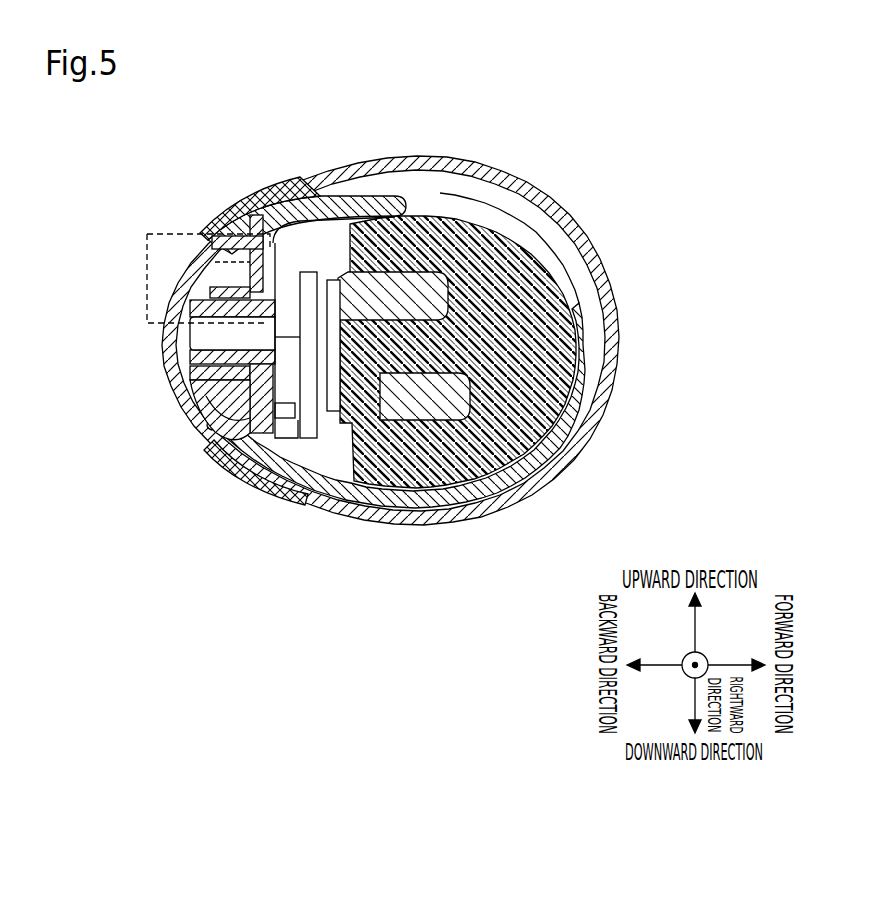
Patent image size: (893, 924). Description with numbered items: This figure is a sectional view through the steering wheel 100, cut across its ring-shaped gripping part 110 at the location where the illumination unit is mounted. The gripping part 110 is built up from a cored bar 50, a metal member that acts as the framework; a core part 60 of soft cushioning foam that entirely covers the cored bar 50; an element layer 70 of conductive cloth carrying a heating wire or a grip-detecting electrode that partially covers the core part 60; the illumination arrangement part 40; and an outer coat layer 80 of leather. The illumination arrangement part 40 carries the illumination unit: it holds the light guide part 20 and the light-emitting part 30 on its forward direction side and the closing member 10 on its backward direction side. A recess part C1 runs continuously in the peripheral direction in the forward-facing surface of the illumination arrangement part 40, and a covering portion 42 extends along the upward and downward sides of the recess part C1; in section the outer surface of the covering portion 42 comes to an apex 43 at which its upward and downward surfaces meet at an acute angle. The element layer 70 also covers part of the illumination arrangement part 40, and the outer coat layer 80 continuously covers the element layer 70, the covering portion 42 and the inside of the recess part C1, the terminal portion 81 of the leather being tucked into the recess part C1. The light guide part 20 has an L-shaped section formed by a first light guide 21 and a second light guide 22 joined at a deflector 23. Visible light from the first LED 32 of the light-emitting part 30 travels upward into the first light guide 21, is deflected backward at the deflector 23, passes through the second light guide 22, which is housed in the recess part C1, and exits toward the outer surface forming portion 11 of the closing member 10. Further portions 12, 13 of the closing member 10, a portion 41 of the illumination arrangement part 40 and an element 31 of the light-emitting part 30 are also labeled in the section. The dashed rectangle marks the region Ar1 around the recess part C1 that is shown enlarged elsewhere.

The steering wheel 100 is at (707, 188).
The gripping part 110 is at (530, 178).
The outer coat layer 80 is at (590, 438).
The element layer 70 is at (585, 395).
The core part 60 is at (557, 330).
The cored bar 50 is at (430, 412).
The illumination arrangement part 40 is at (377, 202).
The holder side wall 41 is at (185, 360).
The covering portion 42 is at (252, 214).
The apex 43 is at (228, 222).
The deflector 23 is at (270, 222).
The light guide part 20 is at (152, 312).
The second light guide 22 is at (168, 337).
The first light guide 21 is at (320, 372).
The conductor lower portion 12 is at (166, 419).
The conductor lip 13 is at (243, 409).
The terminal portion 81 is at (212, 412).
The closing member 10 is at (165, 345).
The outer surface forming portion 11 is at (189, 333).
The light-emitting part 30 is at (310, 478).
The bracket pin 31 is at (308, 272).
The first LED 32 is at (308, 443).
The recess part C1 is at (230, 273).
The region Ar1 is at (178, 233).